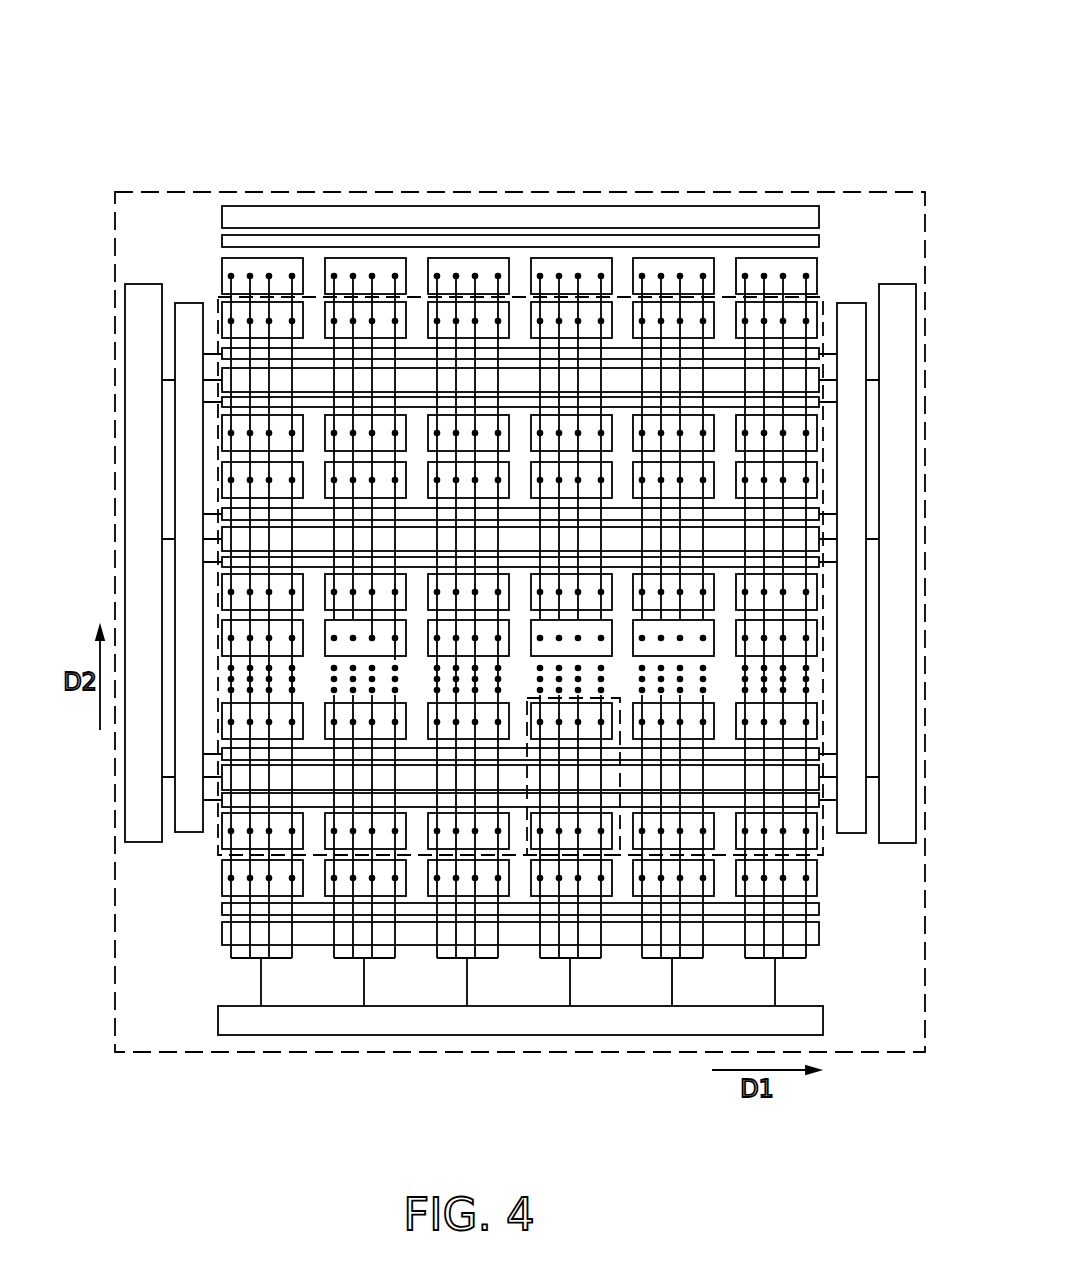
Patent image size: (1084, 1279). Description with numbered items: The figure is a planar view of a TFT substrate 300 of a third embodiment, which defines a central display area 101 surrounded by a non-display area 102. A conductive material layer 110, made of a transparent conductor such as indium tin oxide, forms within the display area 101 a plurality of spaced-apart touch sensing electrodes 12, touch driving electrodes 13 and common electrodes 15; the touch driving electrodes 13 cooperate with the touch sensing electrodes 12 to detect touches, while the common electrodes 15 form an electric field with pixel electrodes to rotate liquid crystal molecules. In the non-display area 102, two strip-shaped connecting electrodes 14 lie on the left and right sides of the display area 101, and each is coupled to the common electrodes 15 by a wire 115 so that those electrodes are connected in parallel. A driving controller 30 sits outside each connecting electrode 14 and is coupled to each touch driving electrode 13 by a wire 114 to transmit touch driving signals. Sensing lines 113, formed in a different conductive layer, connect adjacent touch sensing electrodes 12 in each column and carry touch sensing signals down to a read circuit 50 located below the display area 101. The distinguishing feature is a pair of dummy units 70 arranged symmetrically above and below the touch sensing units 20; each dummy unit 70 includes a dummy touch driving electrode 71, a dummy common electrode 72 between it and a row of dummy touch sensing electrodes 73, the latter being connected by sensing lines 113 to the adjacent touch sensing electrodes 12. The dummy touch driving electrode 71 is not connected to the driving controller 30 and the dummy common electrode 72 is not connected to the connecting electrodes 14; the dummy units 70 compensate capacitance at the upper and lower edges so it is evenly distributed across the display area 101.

The TFT substrate 300 is at (417, 50).
The non-display area 102 is at (750, 198).
The display area 101 is at (624, 297).
The driving controller 30 is at (900, 290).
The connecting electrode 14 is at (853, 320).
The wire 114 is at (167, 377).
The wire 115 is at (210, 350).
The dummy unit 70 is at (552, 540).
The dummy touch driving electrode 71 is at (277, 218).
The dummy common electrode 72 is at (246, 243).
The dummy touch sensing electrode 73 is at (232, 267).
The conductive material layer 110 is at (520, 557).
The touch sensing electrode 12 is at (282, 313).
The touch driving electrode 13 is at (413, 372).
The common electrode 15 is at (313, 357).
The sensing line 113 is at (577, 308).
The touch sensing unit 20 is at (598, 850).
The read circuit 50 is at (677, 1013).